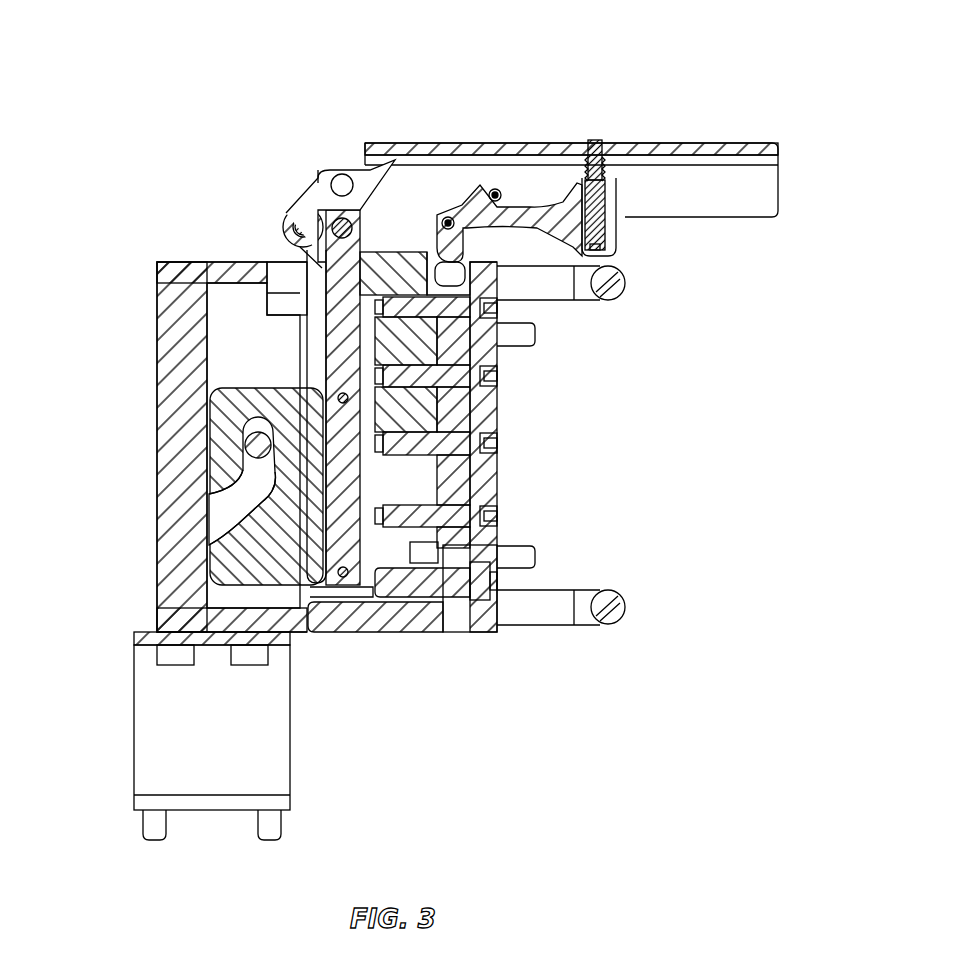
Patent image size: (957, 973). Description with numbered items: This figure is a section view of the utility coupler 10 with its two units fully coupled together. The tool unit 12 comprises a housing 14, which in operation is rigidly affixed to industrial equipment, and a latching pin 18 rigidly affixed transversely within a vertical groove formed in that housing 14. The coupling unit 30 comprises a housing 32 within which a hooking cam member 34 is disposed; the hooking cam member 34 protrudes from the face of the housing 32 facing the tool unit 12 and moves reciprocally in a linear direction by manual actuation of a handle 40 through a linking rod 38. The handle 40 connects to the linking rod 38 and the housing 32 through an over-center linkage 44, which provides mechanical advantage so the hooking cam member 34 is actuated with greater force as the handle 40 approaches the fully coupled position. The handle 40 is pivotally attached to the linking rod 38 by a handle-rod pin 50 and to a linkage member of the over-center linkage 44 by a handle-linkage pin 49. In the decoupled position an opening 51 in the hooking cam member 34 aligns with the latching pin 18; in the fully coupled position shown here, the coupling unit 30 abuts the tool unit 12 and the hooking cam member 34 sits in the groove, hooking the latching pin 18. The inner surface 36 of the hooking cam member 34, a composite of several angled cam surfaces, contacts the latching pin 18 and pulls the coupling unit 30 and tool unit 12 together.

The utility coupler 10 is at (300, 80).
The tool unit 12 is at (110, 462).
The housing 14 is at (222, 262).
The latching pin 18 is at (256, 438).
The coupling unit 30 is at (572, 440).
The housing 32 is at (382, 634).
The hooking cam member 34 is at (290, 566).
The inner surface 36 is at (242, 505).
The linking rod 38 is at (350, 343).
The handle 40 is at (710, 168).
The over-center linkage 44 is at (298, 184).
The handle-linkage pin 49 is at (345, 185).
The handle-rod pin 50 is at (348, 220).
The opening 51 is at (212, 518).